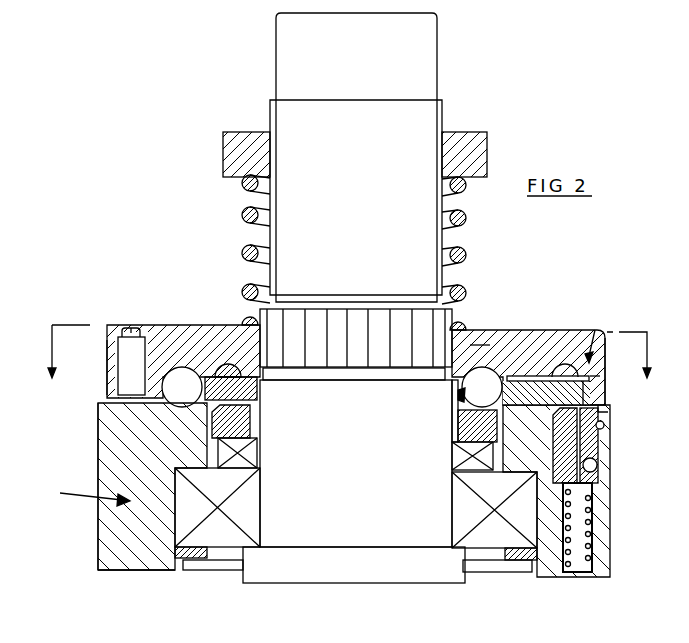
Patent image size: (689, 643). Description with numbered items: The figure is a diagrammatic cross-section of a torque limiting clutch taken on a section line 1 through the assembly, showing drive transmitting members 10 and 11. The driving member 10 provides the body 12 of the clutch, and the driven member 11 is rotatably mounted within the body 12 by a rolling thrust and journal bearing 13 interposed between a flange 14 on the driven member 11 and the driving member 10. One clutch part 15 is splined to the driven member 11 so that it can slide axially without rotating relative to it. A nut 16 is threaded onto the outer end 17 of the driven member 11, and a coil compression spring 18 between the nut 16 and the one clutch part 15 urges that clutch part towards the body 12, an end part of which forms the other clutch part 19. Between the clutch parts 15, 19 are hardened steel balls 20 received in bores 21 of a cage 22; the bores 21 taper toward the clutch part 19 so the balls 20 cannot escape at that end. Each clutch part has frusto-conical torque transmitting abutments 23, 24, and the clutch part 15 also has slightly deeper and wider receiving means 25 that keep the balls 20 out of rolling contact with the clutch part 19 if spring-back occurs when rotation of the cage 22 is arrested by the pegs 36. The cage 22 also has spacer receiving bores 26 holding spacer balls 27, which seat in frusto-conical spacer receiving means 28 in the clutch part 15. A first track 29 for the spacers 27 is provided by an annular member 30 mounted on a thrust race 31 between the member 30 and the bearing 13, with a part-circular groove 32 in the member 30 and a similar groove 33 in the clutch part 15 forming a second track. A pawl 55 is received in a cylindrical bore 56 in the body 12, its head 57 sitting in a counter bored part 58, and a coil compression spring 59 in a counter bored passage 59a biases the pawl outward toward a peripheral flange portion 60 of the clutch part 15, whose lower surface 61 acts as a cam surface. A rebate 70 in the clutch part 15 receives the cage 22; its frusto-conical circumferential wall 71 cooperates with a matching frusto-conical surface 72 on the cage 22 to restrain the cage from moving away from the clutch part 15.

The section line 1 is at (346, 351).
The driving member 10 is at (83, 493).
The driven member 11 is at (354, 446).
The body 12 is at (137, 572).
The rolling thrust and journal bearing 13 is at (222, 532).
The flange 14 is at (457, 545).
The one clutch part 15 is at (106, 362).
The nut 16 is at (488, 150).
The outer end 17 is at (442, 107).
The coil compression spring 18 is at (468, 216).
The other clutch part 19 is at (97, 413).
The balls 20 is at (182, 387).
The bores 21 is at (258, 387).
The cage 22 is at (228, 408).
The torque transmitting abutments 23 is at (178, 360).
The torque transmitting abutments 24 is at (180, 412).
The torque transmitting element receiving means 25 is at (566, 372).
The spacer receiving bores 26 is at (497, 345).
The spacer ball 27 is at (482, 387).
The spacer receiving means 28 is at (478, 343).
The first track 29 is at (458, 397).
The annular member 30 is at (462, 422).
The thrust race 31 is at (458, 455).
The groove 32 is at (503, 405).
The groove 33 is at (228, 368).
The pegs 36 is at (127, 350).
The pawl 55 is at (598, 447).
The bore 56 is at (596, 465).
The head 57 is at (604, 428).
The counter bored part 58 is at (607, 412).
The coil compression spring 59 is at (590, 553).
The counter bored passage 59a is at (590, 530).
The peripheral flange portion 60 is at (607, 383).
The lower surface 61 is at (567, 430).
The rebate 70 is at (596, 335).
The circumferential wall 71 is at (603, 368).
The frusto-conical surface 72 is at (583, 403).